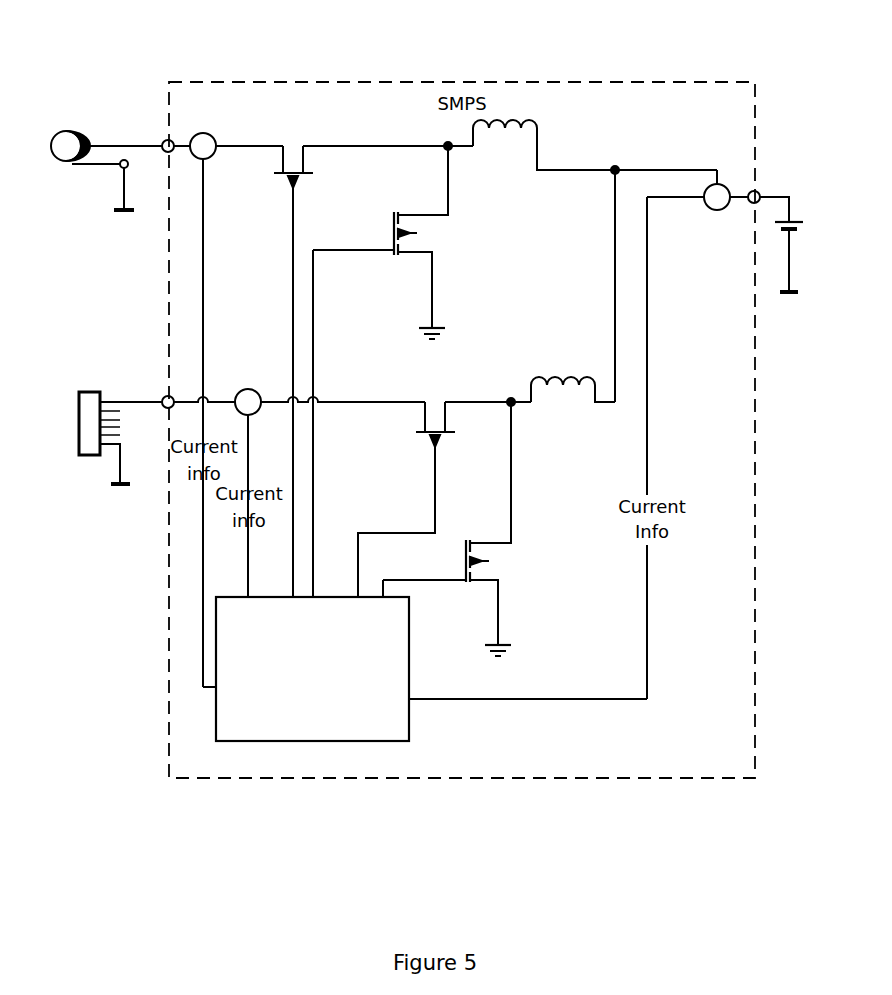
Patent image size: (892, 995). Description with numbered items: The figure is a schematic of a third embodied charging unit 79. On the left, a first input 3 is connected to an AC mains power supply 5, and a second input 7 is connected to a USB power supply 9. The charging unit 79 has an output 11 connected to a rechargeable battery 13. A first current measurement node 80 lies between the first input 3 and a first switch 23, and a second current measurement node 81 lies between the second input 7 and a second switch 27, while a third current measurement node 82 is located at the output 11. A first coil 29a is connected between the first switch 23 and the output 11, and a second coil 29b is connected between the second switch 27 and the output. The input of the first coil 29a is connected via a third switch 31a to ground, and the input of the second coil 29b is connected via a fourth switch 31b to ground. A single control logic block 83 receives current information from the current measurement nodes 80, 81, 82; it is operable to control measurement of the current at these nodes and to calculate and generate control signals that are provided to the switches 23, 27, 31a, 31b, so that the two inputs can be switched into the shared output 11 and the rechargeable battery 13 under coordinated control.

The AC mains power supply 5 is at (70, 122).
The first input 3 is at (161, 138).
The first current measurement node 80 is at (208, 158).
The first switch 23 is at (293, 142).
The charging unit 79 is at (320, 81).
The first coil 29a is at (495, 154).
The third switch 31a is at (433, 230).
The output 11 is at (760, 191).
The rechargeable battery 13 is at (800, 216).
The third current measurement node 82 is at (717, 212).
The second input 7 is at (166, 395).
The second current measurement node 81 is at (243, 388).
The second switch 27 is at (432, 400).
The second coil 29b is at (556, 400).
The fourth switch 31b is at (500, 562).
The USB power supply 9 is at (75, 462).
The control logic block 83 is at (411, 723).